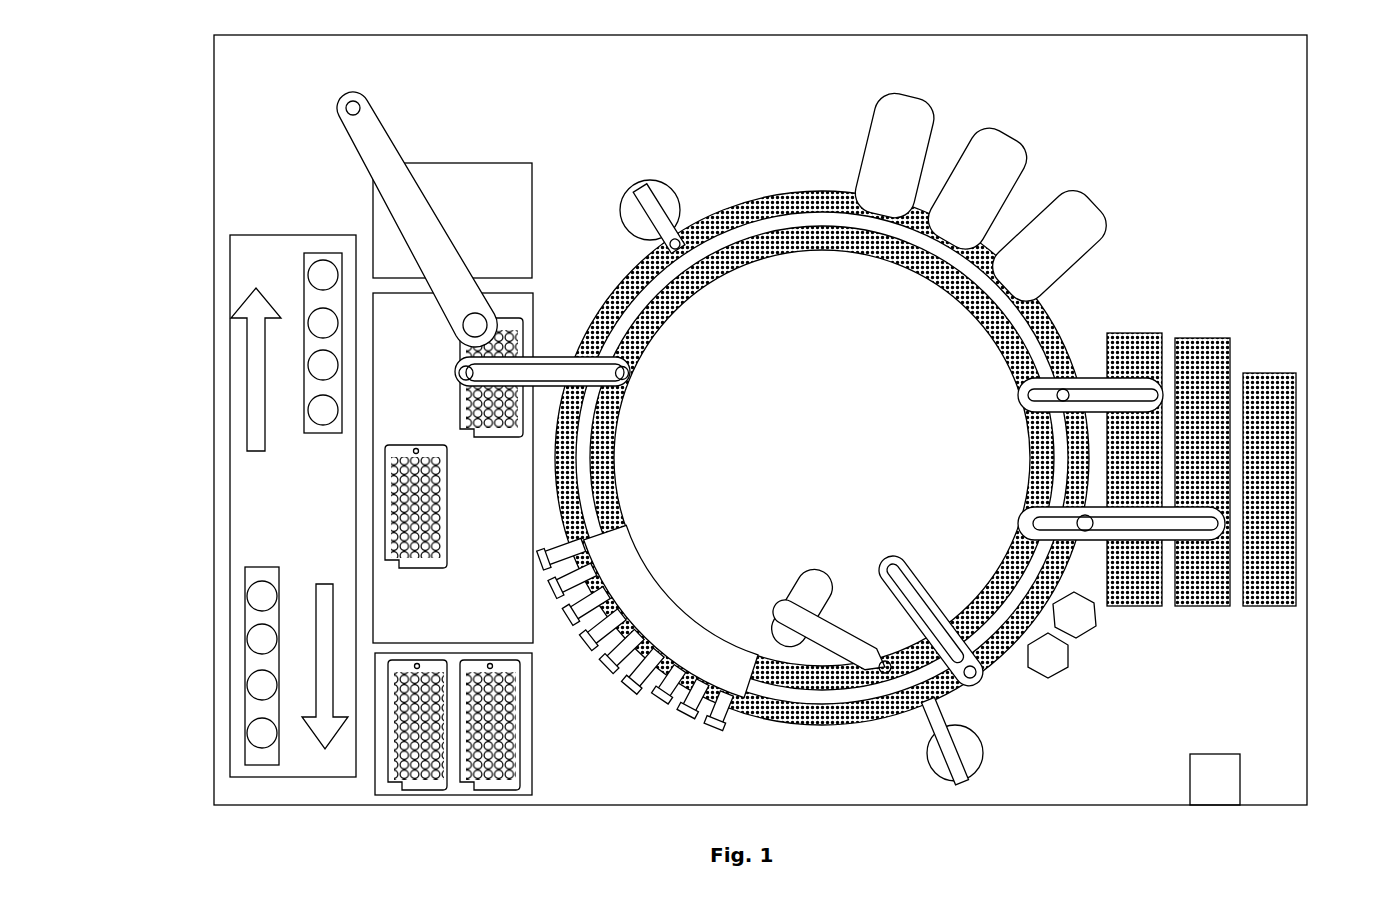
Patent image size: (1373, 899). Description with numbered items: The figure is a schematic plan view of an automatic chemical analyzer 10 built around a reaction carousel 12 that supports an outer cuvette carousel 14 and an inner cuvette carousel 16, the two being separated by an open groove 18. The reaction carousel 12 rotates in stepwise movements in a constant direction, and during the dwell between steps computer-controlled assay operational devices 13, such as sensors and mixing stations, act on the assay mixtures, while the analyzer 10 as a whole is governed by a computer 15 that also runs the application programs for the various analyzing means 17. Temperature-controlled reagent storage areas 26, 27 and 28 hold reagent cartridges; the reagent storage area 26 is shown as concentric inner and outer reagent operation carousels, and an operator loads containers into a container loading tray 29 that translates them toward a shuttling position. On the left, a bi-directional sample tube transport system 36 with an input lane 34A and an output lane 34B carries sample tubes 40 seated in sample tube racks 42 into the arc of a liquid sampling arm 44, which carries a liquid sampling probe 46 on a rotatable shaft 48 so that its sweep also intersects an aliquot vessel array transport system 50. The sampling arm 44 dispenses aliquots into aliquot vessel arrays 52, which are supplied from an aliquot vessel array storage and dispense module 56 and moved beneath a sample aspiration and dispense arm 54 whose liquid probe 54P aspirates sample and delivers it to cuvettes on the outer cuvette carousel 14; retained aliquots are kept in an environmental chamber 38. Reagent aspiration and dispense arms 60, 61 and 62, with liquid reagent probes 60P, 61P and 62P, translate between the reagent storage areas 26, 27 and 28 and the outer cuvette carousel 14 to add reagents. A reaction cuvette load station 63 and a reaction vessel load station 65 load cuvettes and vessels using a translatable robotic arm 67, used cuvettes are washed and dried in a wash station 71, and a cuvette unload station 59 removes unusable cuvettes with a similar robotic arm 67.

The automatic chemical analyzer 10 is at (210, 57).
The reaction carousel 12 is at (822, 390).
The assay operational devices 13 is at (1080, 650).
The outer cuvette carousel 14 is at (778, 200).
The computer 15 is at (1215, 779).
The inner cuvette carousel 16 is at (822, 238).
The analyzing means 17 is at (937, 112).
The open groove 18 is at (760, 232).
The reagent storage area 26 is at (822, 458).
The reagent storage area 27 is at (1205, 608).
The reagent storage area 28 is at (1140, 608).
The container loading tray 29 is at (1272, 608).
The input lane 34A is at (254, 387).
The output lane 34B is at (325, 625).
The sample tube transport system 36 is at (234, 600).
The environmental chamber 38 is at (466, 170).
The sample tube 40 is at (262, 597).
The sample tube rack 42 is at (283, 765).
The liquid sampling arm 44 is at (396, 150).
The liquid sampling probe 46 is at (476, 313).
The rotatable shaft 48 is at (360, 102).
The aliquot vessel array transport system 50 is at (392, 313).
The aliquot vessel array 52 is at (516, 312).
The sample aspiration and dispense arm 54 is at (562, 357).
The liquid probe 54P is at (628, 377).
The aliquot vessel array storage and dispense module 56 is at (540, 793).
The cuvette unload station 59 is at (646, 180).
The reagent aspiration and dispense arm 60 is at (900, 560).
The liquid reagent probe 60P is at (973, 680).
The reagent aspiration and dispense arm 61 is at (1228, 505).
The liquid reagent probe 61P is at (1083, 515).
The reagent aspiration and dispense arm 62 is at (1163, 383).
The liquid reagent probe 62P is at (1065, 388).
The reaction cuvette load station 63 is at (984, 754).
The reaction vessel load station 65 is at (793, 590).
The translatable robotic arm 67 is at (886, 676).
The wash station 71 is at (740, 676).